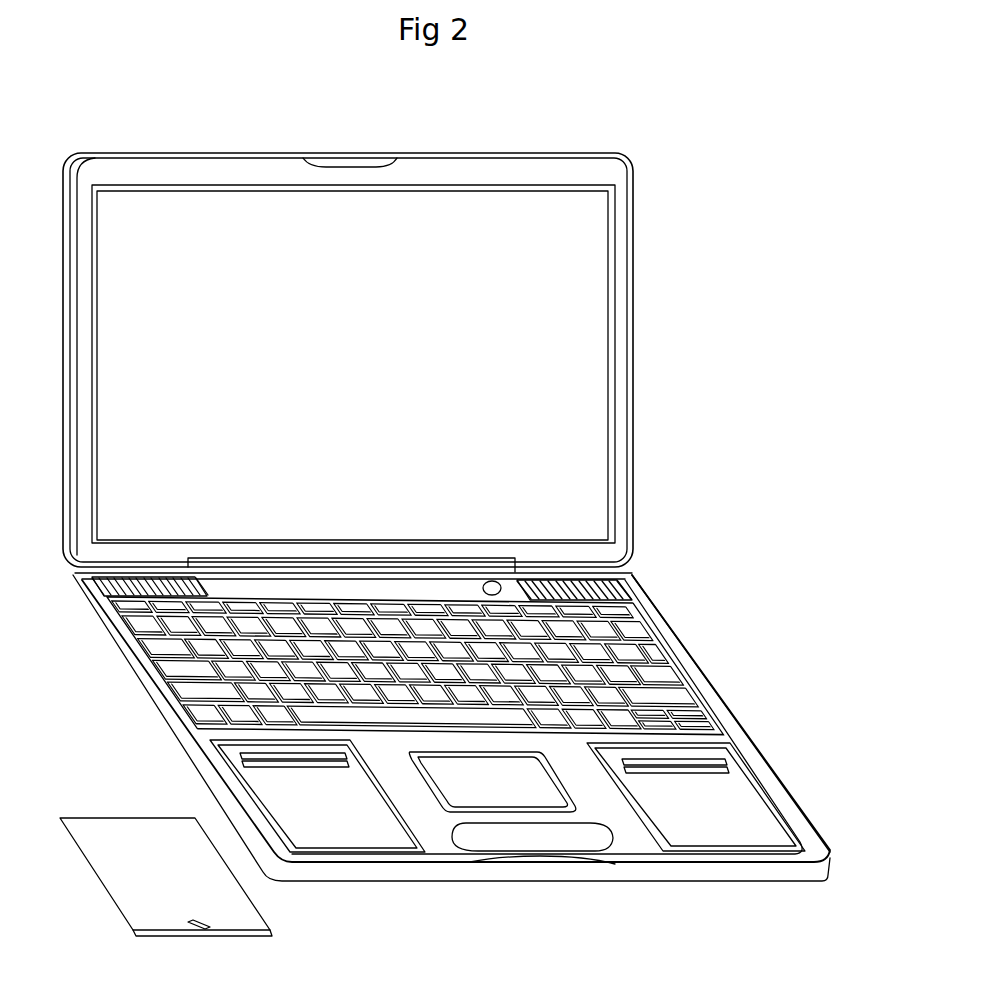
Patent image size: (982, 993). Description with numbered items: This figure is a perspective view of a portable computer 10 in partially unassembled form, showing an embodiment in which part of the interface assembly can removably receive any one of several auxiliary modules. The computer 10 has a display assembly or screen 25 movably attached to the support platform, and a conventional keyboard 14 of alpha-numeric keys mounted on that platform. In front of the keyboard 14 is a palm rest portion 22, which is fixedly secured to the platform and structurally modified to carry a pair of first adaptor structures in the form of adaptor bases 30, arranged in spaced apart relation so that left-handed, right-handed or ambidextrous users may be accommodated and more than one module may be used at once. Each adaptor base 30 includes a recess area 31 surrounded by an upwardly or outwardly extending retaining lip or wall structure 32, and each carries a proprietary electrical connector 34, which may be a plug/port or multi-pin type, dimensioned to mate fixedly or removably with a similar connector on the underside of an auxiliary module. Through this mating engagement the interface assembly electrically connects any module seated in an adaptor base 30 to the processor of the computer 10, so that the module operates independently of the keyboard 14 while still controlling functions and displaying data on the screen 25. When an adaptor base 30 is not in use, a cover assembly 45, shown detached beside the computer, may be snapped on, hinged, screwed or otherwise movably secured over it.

The portable computer 10 is at (683, 190).
The display assembly or display screen 25 is at (552, 330).
The keyboard 14 is at (678, 645).
The palm rest portion 22 is at (632, 848).
The adaptor base 30 is at (358, 825).
The electrical connector 34 is at (293, 767).
The recess area 31 is at (727, 852).
The retaining lip or wall structure 32 is at (765, 812).
The cover assembly 45 is at (232, 912).